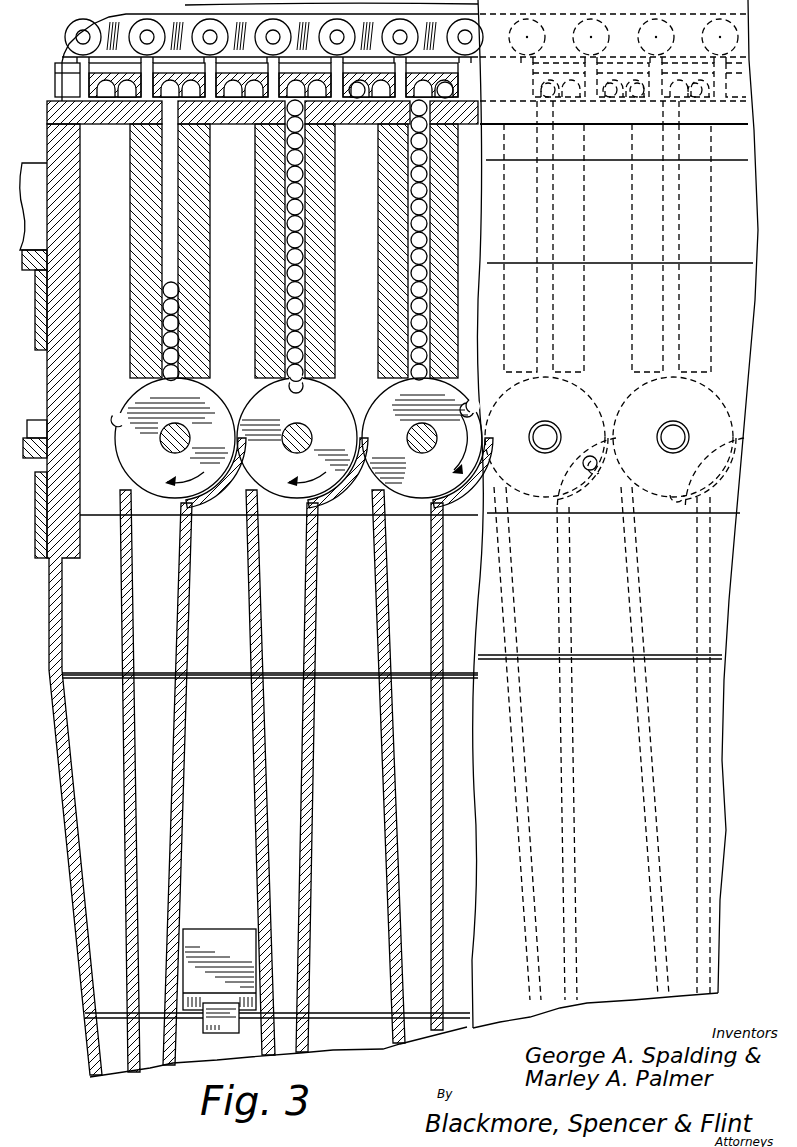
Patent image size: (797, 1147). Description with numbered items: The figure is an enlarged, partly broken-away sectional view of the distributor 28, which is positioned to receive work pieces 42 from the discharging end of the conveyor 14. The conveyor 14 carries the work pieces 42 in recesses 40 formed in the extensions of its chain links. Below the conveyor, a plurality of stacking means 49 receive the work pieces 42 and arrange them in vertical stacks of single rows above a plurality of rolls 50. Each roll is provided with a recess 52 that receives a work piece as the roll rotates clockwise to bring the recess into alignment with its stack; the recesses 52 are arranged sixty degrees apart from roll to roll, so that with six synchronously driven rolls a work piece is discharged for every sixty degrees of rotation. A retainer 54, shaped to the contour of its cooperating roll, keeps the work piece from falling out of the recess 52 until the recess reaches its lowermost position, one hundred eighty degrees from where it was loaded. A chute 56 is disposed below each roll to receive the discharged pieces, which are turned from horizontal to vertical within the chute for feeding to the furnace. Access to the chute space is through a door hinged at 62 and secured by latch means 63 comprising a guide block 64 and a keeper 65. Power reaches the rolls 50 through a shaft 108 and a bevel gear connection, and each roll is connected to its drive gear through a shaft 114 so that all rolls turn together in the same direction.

The conveyor 14 is at (75, 38).
The recesses 40 is at (230, 97).
The work pieces 42 is at (411, 193).
The stacking means 49 is at (138, 200).
The shaft 108 is at (38, 432).
The rolls 50 is at (205, 412).
The recesses 52 is at (127, 415).
The shaft 114 is at (166, 455).
The retainer 54 is at (217, 497).
The chute 56 is at (137, 556).
The hinge 62 is at (218, 679).
The latch means 63 is at (196, 940).
The guide block 64 is at (233, 940).
The keeper 65 is at (225, 1021).
The distributor 28 is at (628, 966).